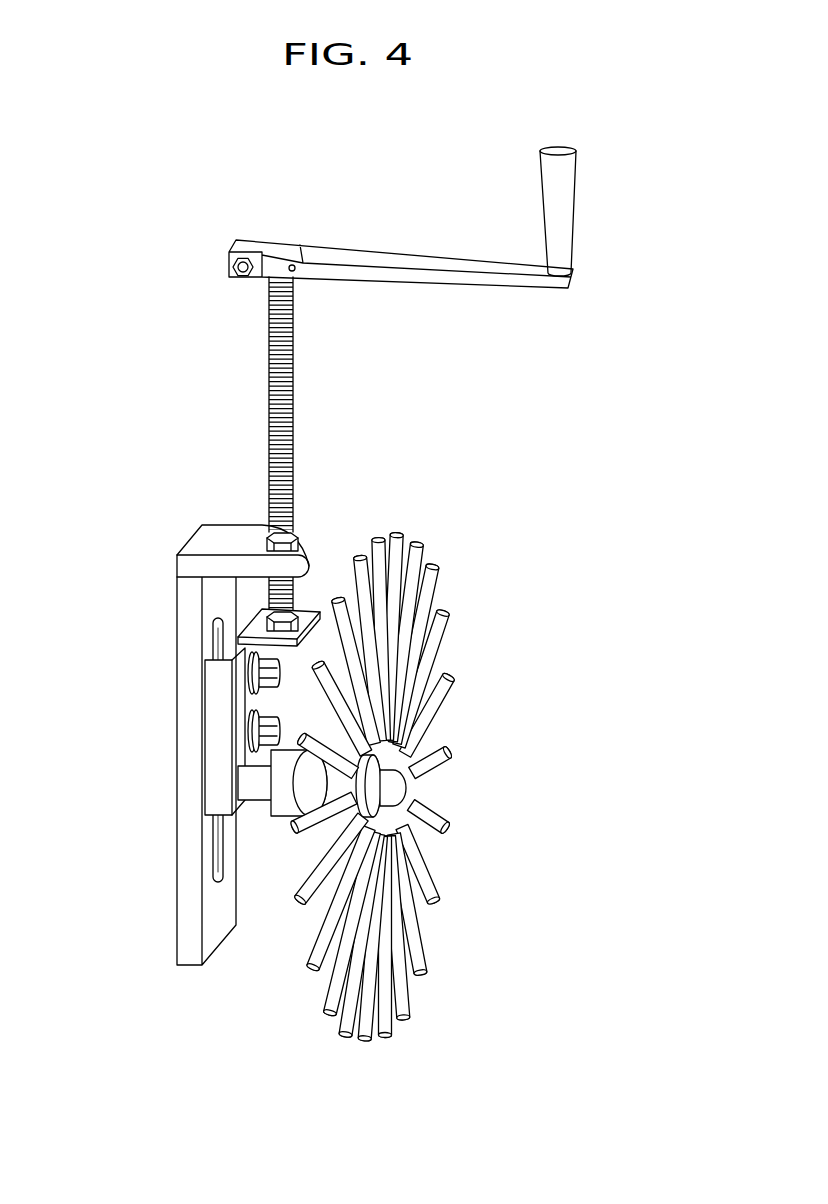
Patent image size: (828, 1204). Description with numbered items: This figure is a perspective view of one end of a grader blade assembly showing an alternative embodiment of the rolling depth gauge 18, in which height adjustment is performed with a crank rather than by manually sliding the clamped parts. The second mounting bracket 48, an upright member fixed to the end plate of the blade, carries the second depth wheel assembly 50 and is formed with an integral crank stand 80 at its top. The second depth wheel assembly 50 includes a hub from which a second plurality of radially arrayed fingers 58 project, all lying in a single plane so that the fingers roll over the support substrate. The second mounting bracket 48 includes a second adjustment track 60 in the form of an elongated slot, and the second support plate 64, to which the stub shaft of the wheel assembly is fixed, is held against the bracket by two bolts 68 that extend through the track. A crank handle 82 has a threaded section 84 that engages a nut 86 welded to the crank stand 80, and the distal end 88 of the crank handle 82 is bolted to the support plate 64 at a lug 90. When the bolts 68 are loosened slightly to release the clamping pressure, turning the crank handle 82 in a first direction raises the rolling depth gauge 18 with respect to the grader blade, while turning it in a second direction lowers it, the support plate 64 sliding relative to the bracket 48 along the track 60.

The rolling depth gauge 18 is at (381, 788).
The second mounting bracket 48 is at (136, 773).
The second depth wheel assembly 50 is at (452, 712).
The second plurality of radially arrayed fingers 58 is at (381, 788).
The second adjustment track 60 is at (216, 848).
The second support plate 64 is at (215, 762).
The bolts 68 is at (255, 735).
The crank stand 80 is at (232, 543).
The crank handle 82 is at (568, 207).
The threaded section 84 is at (295, 385).
The nut 86 is at (297, 533).
The distal end 88 is at (302, 608).
The lug 90 is at (252, 636).